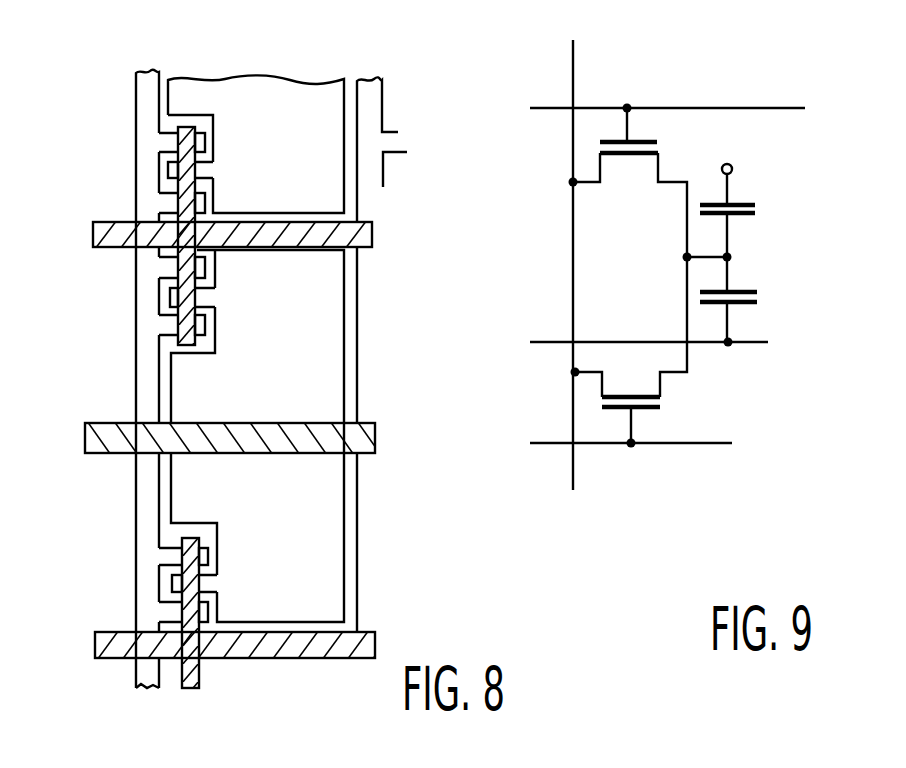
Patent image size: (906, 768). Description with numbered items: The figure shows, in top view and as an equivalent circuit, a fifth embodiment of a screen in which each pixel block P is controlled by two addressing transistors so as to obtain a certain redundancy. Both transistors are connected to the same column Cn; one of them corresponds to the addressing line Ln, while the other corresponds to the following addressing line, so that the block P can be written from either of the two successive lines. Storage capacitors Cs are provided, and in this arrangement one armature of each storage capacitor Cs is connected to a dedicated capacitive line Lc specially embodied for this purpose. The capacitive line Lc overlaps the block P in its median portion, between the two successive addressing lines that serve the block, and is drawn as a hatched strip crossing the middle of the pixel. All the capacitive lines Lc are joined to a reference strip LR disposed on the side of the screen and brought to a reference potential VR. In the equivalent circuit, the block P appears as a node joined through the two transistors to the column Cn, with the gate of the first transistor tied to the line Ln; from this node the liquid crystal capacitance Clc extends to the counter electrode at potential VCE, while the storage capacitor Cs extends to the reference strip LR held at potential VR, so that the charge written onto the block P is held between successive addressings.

In FIG. 8, the column Cn is at (142, 92).
In FIG. 8, the line Ln is at (93, 233).
In FIG. 9, the line Ln is at (541, 105).
In FIG. 8, the capacitive line Lc is at (92, 440).
In FIG. 8, the block P is at (173, 407).
In FIG. 9, the liquid crystal capacitance Clc is at (712, 218).
In FIG. 9, the storage capacitor Cs is at (714, 299).
In FIG. 9, the counter electrode potential VCE is at (735, 160).
In FIG. 9, the reference potential VR is at (792, 341).
In FIG. 9, the reference strip LR is at (544, 339).